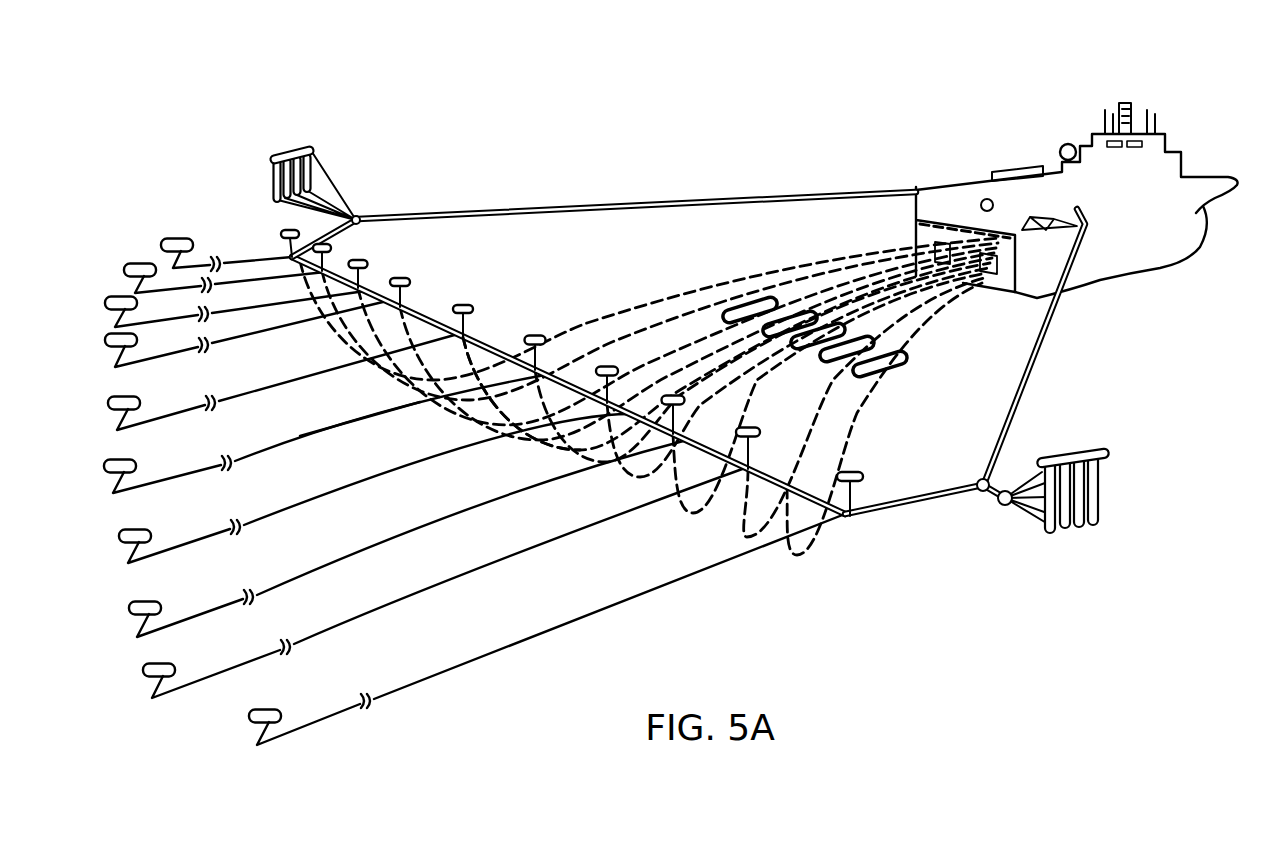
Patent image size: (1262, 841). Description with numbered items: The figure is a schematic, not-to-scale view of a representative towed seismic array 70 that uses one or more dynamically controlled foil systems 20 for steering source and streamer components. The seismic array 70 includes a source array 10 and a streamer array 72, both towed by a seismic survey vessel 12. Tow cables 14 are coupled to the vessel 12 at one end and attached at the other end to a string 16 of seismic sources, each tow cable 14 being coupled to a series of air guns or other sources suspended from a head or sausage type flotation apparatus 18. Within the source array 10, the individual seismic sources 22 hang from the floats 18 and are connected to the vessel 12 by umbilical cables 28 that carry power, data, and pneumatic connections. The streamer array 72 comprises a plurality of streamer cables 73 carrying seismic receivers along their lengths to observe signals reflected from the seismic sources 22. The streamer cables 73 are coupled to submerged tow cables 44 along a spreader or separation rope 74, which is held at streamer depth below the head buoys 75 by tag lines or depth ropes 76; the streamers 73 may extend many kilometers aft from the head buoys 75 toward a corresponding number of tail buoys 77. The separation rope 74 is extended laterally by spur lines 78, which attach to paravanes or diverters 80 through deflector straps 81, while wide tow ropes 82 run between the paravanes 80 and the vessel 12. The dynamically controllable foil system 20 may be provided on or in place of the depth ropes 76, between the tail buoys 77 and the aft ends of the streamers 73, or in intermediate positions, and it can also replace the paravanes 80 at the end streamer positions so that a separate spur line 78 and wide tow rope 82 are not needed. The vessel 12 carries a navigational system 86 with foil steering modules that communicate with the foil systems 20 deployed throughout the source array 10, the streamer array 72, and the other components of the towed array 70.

The towed seismic array 70 is at (487, 70).
The streamer array 72 is at (170, 215).
The vessel 12 is at (1197, 175).
The source array 10 is at (753, 237).
The tow cable 14 is at (875, 280).
The string of seismic sources 16 is at (740, 297).
The flotation apparatus 18 is at (913, 348).
The dynamically controlled foil system 20 is at (905, 372).
The seismic source 22 is at (281, 233).
The umbilical cable 28 is at (962, 297).
The submerged cable 44 is at (673, 303).
The streamer cable 73 is at (342, 433).
The separation rope 74 is at (422, 317).
The head buoy 75 is at (464, 327).
The depth rope 76 is at (475, 323).
The tail buoy 77 is at (173, 260).
The spur line 78 is at (940, 490).
The paravane 80 is at (280, 153).
The deflector strap 81 is at (333, 183).
The wide tow rope 82 is at (1042, 320).
The navigational system 86 is at (980, 203).